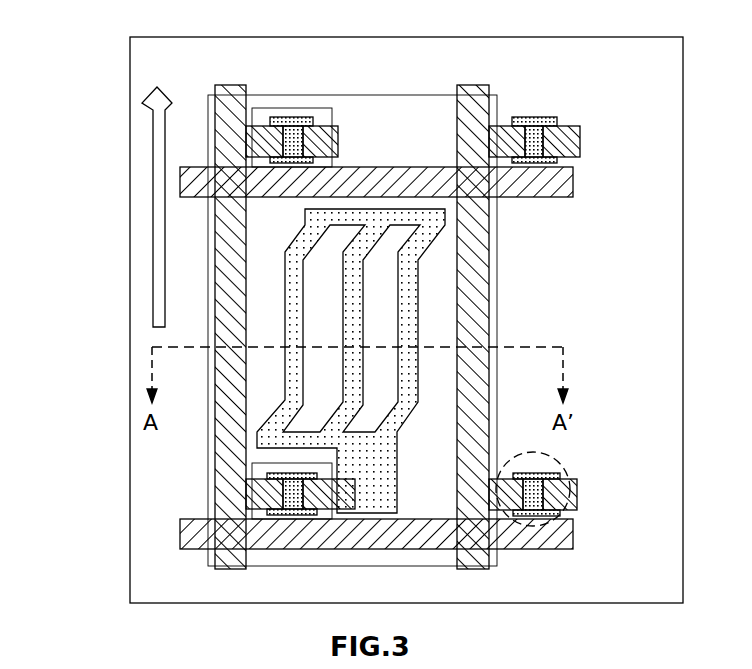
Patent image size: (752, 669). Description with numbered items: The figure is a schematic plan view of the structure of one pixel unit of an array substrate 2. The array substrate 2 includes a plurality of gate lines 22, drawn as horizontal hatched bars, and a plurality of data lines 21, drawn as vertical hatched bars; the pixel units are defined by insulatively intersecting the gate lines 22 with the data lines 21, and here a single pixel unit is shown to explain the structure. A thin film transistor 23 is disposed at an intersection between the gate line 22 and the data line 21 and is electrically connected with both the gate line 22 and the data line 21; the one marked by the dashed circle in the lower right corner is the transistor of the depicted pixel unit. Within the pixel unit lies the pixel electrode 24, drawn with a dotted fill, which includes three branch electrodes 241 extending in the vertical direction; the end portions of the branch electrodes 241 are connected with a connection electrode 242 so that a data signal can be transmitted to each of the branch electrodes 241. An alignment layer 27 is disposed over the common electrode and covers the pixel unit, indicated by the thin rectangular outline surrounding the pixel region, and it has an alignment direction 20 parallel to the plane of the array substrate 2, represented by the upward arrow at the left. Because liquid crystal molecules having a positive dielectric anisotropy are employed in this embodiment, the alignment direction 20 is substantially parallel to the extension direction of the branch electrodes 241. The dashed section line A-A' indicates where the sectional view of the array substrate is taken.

The array substrate 2 is at (458, 50).
The alignment direction 20 is at (153, 138).
The data line 21 is at (470, 108).
The gate line 22 is at (567, 195).
The thin film transistor 23 is at (568, 470).
The pixel electrode 24 is at (418, 284).
The branch electrode 241 is at (407, 378).
The connection electrode 242 is at (400, 208).
The alignment layer 27 is at (497, 327).